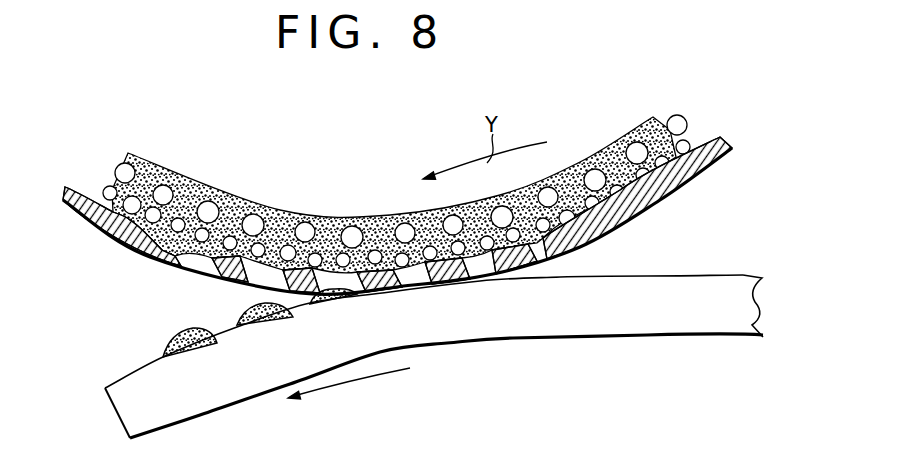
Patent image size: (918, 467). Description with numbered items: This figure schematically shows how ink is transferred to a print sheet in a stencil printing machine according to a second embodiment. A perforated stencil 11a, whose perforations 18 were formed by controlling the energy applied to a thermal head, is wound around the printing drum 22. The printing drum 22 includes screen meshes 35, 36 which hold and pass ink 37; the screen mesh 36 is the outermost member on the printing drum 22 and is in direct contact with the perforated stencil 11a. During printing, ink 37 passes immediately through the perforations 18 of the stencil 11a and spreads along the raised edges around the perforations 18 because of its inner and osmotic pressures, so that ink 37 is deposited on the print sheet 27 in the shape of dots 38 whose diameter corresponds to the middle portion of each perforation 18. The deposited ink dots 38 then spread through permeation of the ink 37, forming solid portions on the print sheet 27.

The perforated stencil 11a is at (116, 232).
The perforations 18 is at (192, 273).
The printing drum 22 is at (693, 110).
The print sheet 27 is at (205, 392).
The screen mesh 35 is at (677, 115).
The screen mesh 36 is at (692, 146).
The ink 37 is at (237, 197).
The ink dots 38 is at (176, 334).